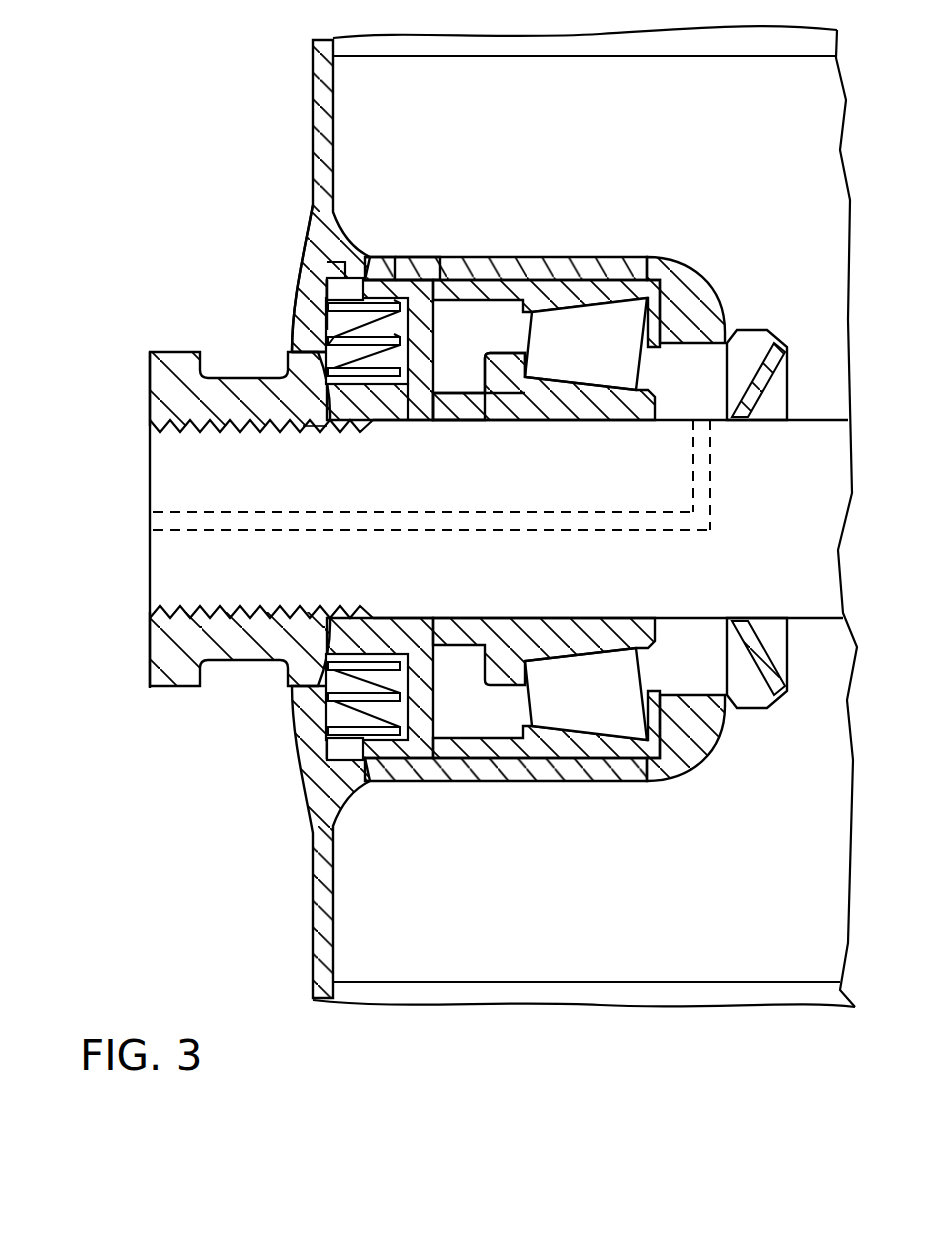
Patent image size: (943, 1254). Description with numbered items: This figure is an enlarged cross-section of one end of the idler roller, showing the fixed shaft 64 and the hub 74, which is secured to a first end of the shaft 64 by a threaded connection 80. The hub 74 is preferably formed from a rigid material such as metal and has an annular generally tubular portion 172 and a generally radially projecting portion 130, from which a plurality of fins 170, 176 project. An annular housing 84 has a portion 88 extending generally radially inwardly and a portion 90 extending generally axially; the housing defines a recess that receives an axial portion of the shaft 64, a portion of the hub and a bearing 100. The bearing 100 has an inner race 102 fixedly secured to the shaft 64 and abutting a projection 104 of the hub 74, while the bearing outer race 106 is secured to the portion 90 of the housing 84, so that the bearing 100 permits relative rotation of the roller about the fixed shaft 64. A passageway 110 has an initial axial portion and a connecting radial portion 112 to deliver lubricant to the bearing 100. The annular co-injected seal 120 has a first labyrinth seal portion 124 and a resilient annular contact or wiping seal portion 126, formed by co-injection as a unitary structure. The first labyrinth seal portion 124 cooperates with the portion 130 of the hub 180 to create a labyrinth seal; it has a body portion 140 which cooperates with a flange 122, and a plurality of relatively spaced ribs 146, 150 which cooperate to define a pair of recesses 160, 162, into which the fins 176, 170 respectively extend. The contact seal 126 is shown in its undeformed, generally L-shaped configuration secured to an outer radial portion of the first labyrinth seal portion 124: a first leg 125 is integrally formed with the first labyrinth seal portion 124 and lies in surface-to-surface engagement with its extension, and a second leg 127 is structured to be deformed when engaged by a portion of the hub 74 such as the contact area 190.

The annular housing 84 is at (310, 140).
The radially inwardly extending portion 88 is at (334, 900).
The fixed shaft 64 is at (148, 577).
The hub 74 is at (147, 657).
The annular generally tubular portion 172 is at (170, 395).
The threaded connection 80 is at (187, 433).
The passageway 110 is at (522, 538).
The radial portion 112 is at (717, 489).
The first labyrinth seal portion 124 is at (490, 272).
The axially extending portion 90 is at (556, 784).
The hub 180 is at (417, 262).
The first leg 125 is at (372, 262).
The bearing outer race 106 is at (648, 258).
The body portion 140 is at (586, 283).
The bearing 100 is at (607, 343).
The inner race 102 is at (592, 420).
The projection 104 is at (482, 428).
The recess 160 is at (428, 400).
The flange 122 is at (417, 400).
The contact area 190 is at (352, 262).
The second leg 127 is at (338, 268).
The annular co-injected seal 120 is at (434, 342).
The recess 162 is at (440, 313).
The rib 150 is at (335, 417).
The rib 146 is at (307, 430).
The fin 176 is at (292, 357).
The contact seal portion 126 is at (343, 290).
The fin 170 is at (340, 318).
The radially projecting portion 130 is at (298, 328).